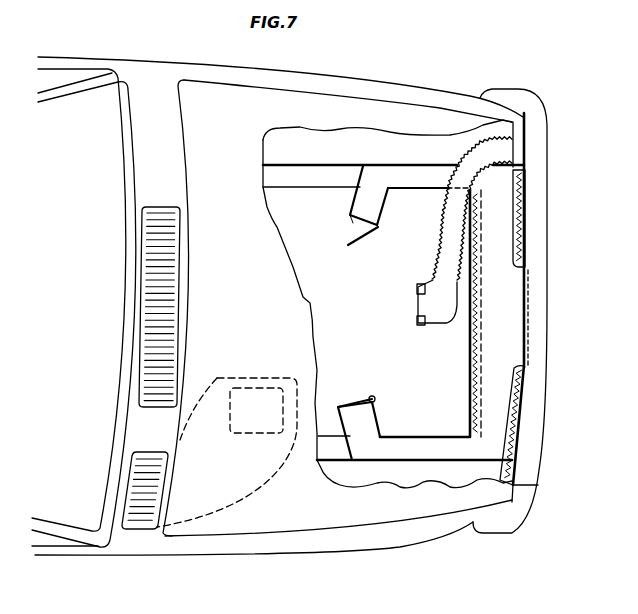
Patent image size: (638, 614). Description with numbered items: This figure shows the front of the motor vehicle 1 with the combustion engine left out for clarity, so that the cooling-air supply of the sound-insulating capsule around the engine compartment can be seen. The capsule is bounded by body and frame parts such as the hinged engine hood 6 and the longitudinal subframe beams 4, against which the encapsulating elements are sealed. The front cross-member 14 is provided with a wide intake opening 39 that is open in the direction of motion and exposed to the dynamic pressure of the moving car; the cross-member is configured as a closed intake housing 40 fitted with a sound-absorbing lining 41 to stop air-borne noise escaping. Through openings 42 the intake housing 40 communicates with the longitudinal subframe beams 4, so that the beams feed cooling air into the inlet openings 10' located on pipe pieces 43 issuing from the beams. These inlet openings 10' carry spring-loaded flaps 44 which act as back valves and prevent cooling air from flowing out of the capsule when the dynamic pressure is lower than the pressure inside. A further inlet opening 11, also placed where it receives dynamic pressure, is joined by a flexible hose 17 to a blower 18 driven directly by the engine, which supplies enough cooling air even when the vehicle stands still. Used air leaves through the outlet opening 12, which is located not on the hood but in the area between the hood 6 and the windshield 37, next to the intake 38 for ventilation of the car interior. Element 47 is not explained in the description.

The motor vehicle 1 is at (77, 50).
The longitudinal subframe beams 4 is at (431, 160).
The engine hood 6 is at (358, 107).
The inlet openings 10' is at (358, 309).
The inlet opening 11 is at (517, 153).
The outlet opening 12 is at (147, 495).
The front cross-member 14 is at (460, 382).
The flexible hose 17 is at (443, 255).
The blower 18 is at (423, 327).
The windshield 37 is at (80, 510).
The intake 38 is at (172, 297).
The intake opening 39 is at (528, 305).
The intake housing 40 is at (510, 337).
The sound-absorbing lining 41 is at (513, 242).
The openings 42 is at (495, 216).
The pipe pieces 43 is at (371, 203).
The spring-loaded flaps 44 is at (361, 243).
The panel edge 47 is at (468, 409).